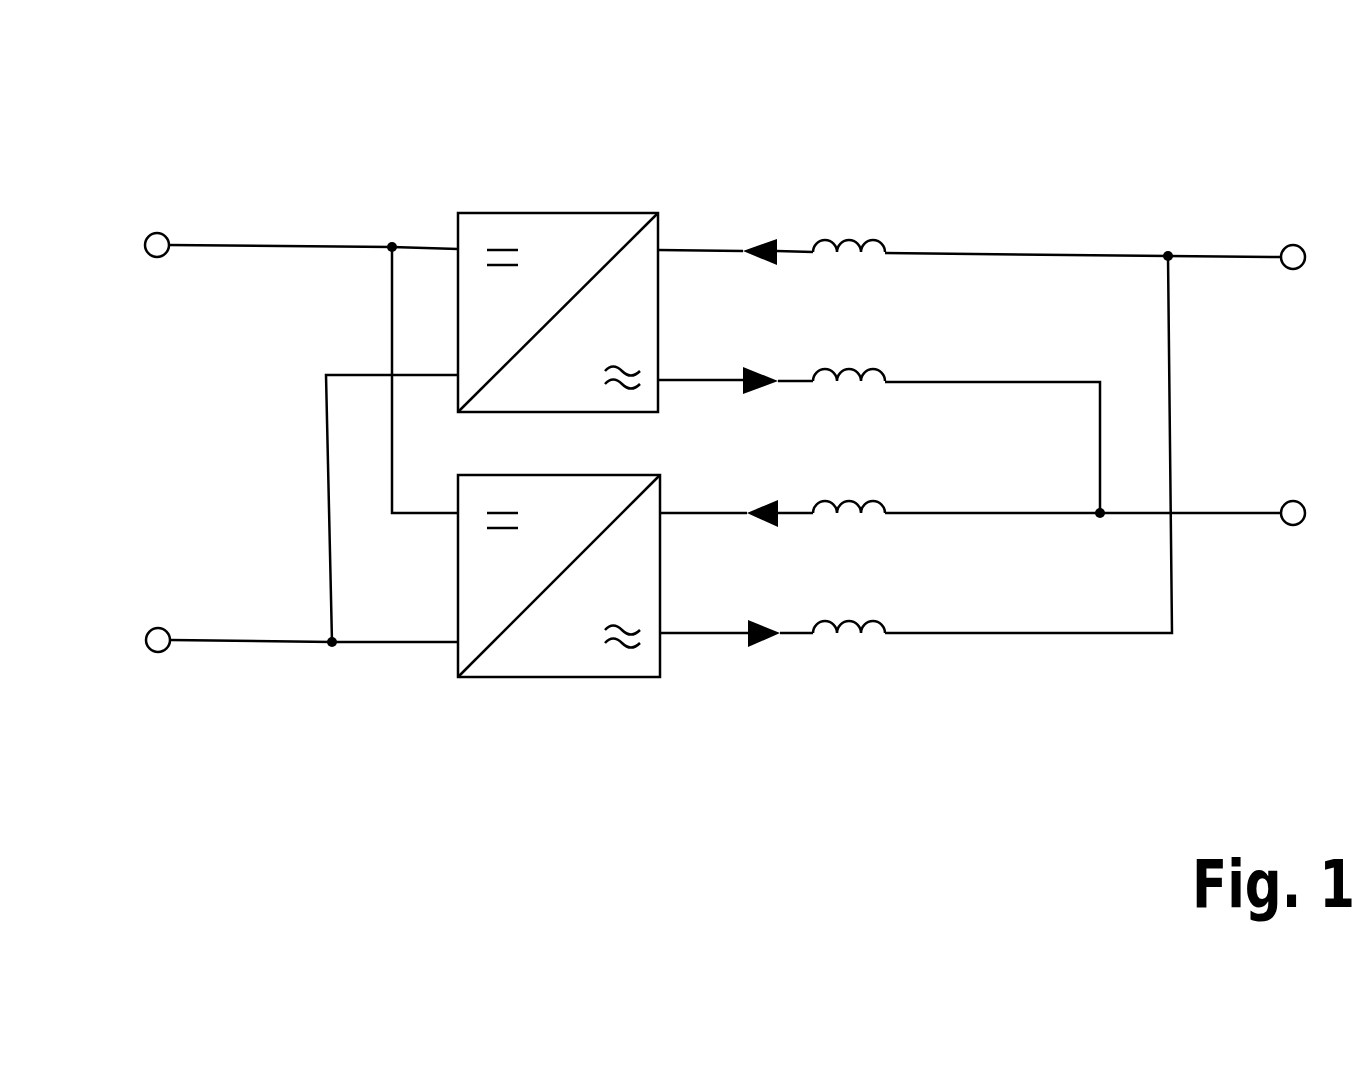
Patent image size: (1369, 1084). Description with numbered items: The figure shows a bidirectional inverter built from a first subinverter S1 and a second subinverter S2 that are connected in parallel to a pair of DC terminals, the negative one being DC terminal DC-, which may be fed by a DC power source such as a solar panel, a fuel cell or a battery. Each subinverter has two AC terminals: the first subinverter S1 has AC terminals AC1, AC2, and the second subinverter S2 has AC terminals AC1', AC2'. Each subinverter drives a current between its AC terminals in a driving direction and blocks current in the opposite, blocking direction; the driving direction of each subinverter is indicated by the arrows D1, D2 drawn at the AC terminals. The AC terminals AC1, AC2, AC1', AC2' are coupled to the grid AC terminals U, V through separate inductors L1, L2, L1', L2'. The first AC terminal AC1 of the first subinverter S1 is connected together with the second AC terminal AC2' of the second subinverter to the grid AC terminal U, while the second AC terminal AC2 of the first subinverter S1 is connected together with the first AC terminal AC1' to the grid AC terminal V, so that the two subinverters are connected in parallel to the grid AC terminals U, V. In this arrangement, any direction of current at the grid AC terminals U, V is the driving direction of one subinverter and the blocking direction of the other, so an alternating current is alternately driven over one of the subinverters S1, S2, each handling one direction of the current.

The first subinverter S1 is at (560, 213).
The second subinverter S2 is at (563, 677).
The arrow indicating driving direction of first subinverter D1 is at (765, 370).
The arrow indicating driving direction of second subinverter D2 is at (778, 528).
The inductor L1 is at (831, 217).
The inductor L2 is at (831, 345).
The inductor L1' is at (831, 484).
The inductor L2' is at (832, 599).
The first AC terminal of first subinverter AC1 is at (700, 235).
The second AC terminal of first subinverter AC2 is at (700, 364).
The first AC terminal of second subinverter AC1' is at (706, 495).
The second AC terminal of second subinverter AC2' is at (706, 615).
The DC terminal DC- is at (246, 642).
The grid AC terminal U is at (1113, 255).
The grid AC terminal V is at (1112, 515).